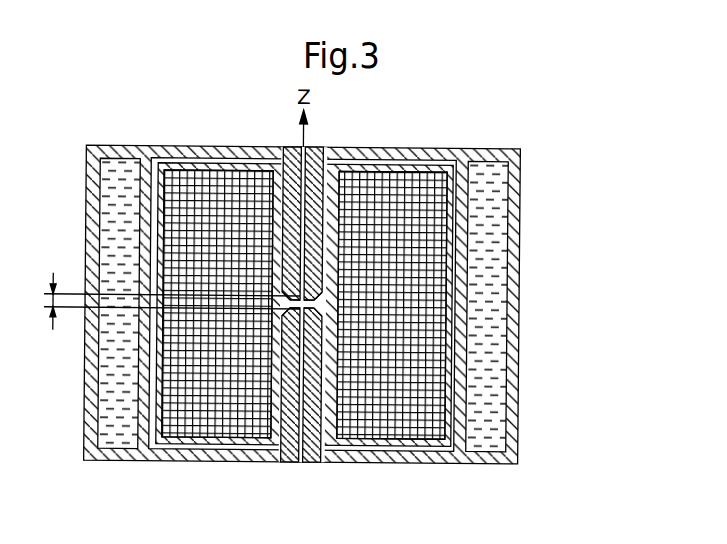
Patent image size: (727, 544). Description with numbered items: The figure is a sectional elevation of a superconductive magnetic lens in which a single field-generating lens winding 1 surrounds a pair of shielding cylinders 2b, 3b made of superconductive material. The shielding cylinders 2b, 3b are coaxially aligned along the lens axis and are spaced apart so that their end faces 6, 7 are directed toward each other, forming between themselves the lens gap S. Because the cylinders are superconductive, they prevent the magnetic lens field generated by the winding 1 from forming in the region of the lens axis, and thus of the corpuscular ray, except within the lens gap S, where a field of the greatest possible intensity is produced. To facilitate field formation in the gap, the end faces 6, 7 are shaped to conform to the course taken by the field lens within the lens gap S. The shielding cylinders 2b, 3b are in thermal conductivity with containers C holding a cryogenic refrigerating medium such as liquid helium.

The lens winding 1 is at (412, 233).
The shielding cylinder 2b is at (310, 215).
The shielding cylinder 3b is at (312, 378).
The end face 6 is at (306, 300).
The end face 7 is at (303, 306).
The container C is at (488, 323).
The lens gap S is at (165, 302).